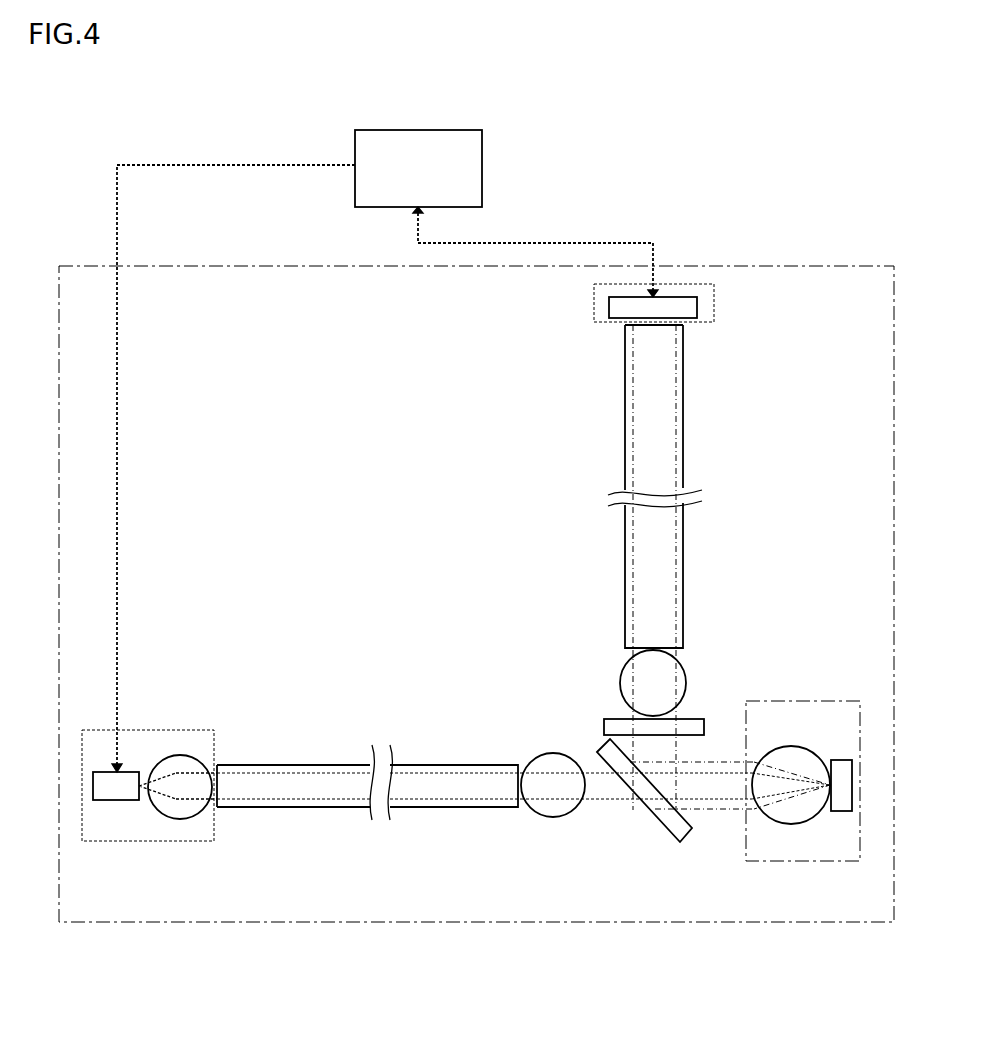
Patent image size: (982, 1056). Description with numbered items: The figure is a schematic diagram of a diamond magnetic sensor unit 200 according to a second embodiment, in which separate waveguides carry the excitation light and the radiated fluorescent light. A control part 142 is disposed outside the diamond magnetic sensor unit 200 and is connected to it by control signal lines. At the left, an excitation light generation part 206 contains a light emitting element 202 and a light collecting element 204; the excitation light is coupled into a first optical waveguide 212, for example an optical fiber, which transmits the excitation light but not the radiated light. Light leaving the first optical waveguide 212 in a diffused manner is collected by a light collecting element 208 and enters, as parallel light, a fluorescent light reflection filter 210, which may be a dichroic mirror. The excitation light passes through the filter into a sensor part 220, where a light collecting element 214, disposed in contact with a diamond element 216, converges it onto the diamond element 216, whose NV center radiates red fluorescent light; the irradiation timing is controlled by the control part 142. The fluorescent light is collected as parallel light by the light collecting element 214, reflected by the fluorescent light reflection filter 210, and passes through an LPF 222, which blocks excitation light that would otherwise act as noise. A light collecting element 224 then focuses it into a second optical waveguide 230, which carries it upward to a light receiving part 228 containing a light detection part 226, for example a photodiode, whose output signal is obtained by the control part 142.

The control part 142 is at (423, 130).
The diamond magnetic sensor unit 200 is at (800, 266).
The light emitting element 202 is at (104, 772).
The light collecting element 204 is at (180, 755).
The excitation light generation part 206 is at (145, 841).
The light collecting element 208 is at (552, 818).
The fluorescent light reflection filter 210 is at (655, 820).
The first optical waveguide 212 is at (306, 807).
The light collecting element 214 is at (790, 825).
The diamond element 216 is at (843, 811).
The sensor part 220 is at (792, 701).
The LPF 222 is at (604, 727).
The light collecting element 224 is at (687, 686).
The light detection part 226 is at (698, 308).
The light receiving part 228 is at (594, 300).
The second optical waveguide 230 is at (625, 578).